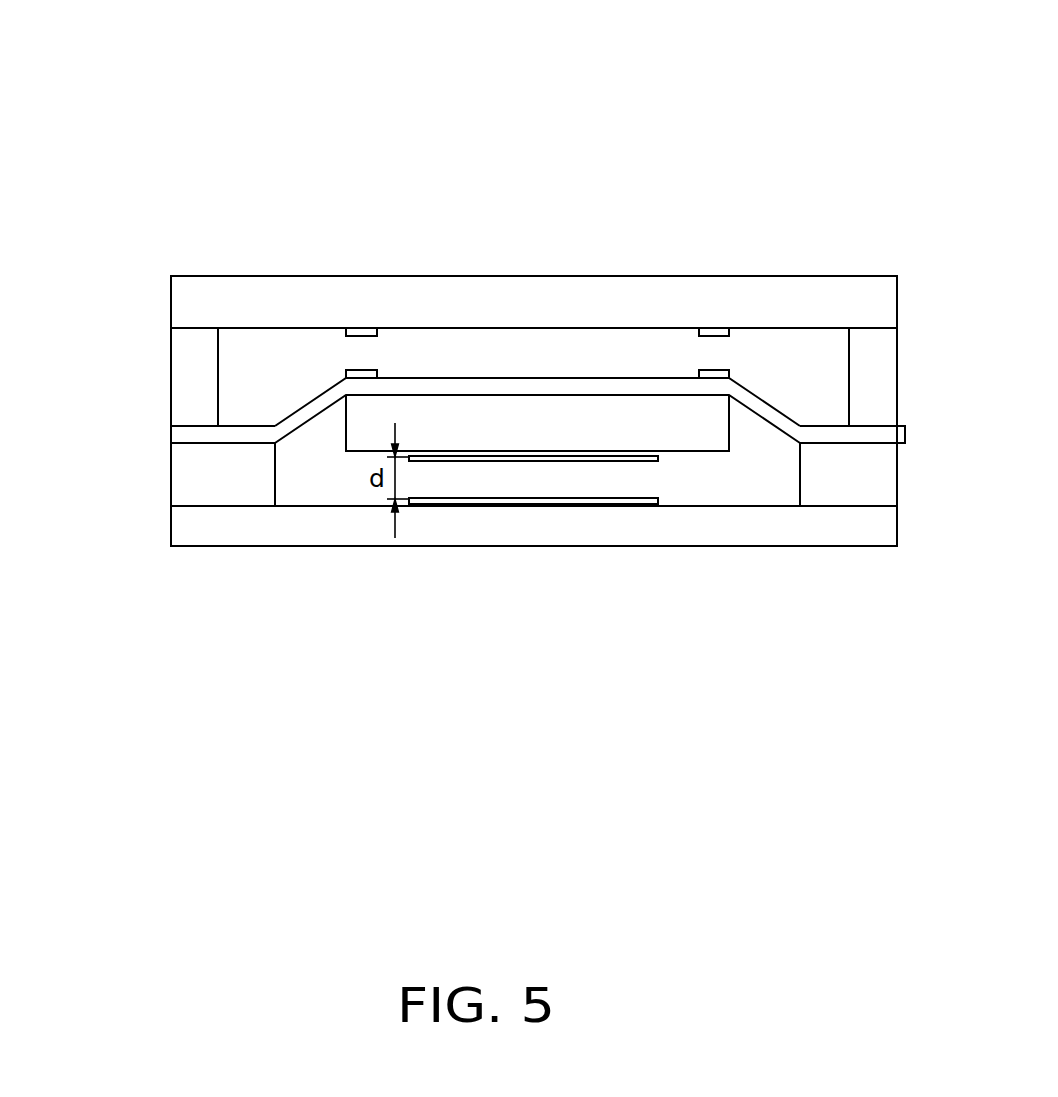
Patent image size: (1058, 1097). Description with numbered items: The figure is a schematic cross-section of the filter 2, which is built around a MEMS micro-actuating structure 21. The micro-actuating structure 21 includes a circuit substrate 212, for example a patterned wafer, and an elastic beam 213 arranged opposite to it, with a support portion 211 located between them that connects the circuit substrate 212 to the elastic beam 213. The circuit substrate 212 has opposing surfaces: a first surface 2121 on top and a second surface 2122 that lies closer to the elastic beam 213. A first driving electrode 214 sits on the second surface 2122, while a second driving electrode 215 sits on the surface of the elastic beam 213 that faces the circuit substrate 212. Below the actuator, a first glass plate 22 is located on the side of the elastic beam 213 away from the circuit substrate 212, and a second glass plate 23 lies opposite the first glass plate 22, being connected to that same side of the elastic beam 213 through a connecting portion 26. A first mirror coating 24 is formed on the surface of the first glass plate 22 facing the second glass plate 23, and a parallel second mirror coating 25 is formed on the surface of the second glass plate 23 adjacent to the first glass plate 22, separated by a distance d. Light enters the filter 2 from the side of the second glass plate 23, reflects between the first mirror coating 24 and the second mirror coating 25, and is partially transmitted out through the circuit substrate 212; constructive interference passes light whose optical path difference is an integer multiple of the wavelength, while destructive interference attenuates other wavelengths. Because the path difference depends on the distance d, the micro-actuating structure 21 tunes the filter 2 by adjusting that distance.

The filter 2 is at (533, 40).
The micro-actuating structure 21 is at (98, 240).
The support portion 211 is at (187, 373).
The circuit substrate 212 is at (197, 303).
The first surface 2121 is at (468, 276).
The second surface 2122 is at (558, 328).
The elastic beam 213 is at (188, 433).
The first driving electrode 214 is at (360, 332).
The second driving electrode 215 is at (355, 375).
The first glass plate 22 is at (715, 424).
The second glass plate 23 is at (883, 532).
The first mirror coating 24 is at (658, 458).
The second mirror coating 25 is at (658, 501).
The connecting portion 26 is at (183, 467).